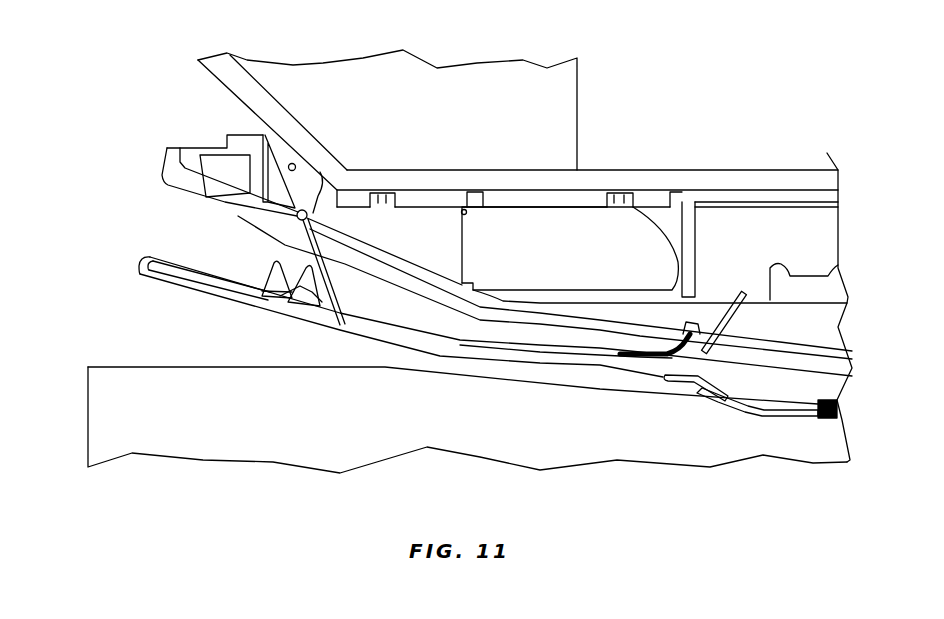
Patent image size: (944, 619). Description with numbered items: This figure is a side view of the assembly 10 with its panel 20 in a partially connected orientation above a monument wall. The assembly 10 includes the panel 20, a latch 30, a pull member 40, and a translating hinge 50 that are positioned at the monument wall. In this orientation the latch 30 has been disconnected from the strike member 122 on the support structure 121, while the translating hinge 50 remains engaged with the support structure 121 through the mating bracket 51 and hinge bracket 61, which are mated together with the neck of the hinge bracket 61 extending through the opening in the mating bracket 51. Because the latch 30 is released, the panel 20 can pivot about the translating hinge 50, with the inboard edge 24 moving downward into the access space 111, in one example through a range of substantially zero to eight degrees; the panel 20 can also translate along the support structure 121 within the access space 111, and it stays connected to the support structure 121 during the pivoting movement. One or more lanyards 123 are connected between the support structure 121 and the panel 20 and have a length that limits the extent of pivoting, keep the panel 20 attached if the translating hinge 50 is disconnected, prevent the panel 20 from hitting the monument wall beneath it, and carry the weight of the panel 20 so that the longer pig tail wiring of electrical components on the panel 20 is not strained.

The assembly 10 is at (376, 344).
The panel 20 is at (317, 323).
The inboard edge 24 is at (140, 262).
The latch 30 is at (277, 277).
The pull member 40 is at (248, 282).
The translating hinge 50 is at (683, 338).
The mating bracket 51 is at (694, 326).
The hinge bracket 61 is at (668, 345).
The access space 111 is at (188, 342).
The support structure 121 is at (510, 228).
The strike member 122 is at (238, 216).
The lanyard 123 is at (338, 292).